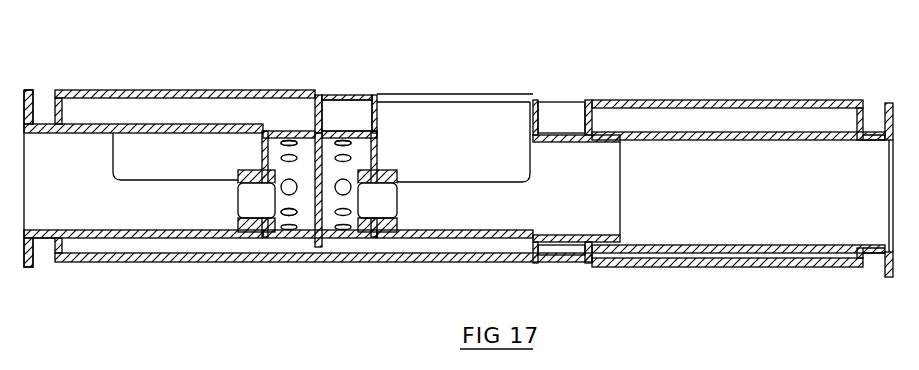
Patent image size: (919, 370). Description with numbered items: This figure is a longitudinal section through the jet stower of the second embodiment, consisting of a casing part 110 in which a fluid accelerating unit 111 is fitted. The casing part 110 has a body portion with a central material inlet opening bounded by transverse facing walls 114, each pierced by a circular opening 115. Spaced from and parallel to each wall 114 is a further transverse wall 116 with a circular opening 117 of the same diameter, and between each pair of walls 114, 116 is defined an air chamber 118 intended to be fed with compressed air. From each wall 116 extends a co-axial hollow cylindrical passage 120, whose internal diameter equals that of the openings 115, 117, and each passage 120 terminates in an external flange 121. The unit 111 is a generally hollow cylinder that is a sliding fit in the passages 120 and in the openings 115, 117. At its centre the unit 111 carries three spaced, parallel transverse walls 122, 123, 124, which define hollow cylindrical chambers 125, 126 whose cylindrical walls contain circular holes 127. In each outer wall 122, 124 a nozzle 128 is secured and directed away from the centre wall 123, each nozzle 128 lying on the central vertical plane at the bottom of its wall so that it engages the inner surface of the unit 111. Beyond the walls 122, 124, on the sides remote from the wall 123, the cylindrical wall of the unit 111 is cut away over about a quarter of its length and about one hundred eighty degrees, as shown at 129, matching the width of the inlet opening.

The casing part 110 is at (745, 268).
The fluid accelerating unit 111 is at (550, 148).
The transverse facing wall 114 is at (378, 132).
The circular opening 115 is at (380, 140).
The further transverse wall 116 is at (313, 116).
The circular opening 117 is at (332, 238).
The air chamber 118 is at (353, 113).
The hollow cylindrical passage 120 is at (722, 137).
The external flange 121 is at (28, 268).
The outer transverse wall 122 is at (255, 158).
The centre wall 123 is at (302, 215).
The outer transverse wall 124 is at (380, 153).
The hollow cylindrical chamber 125 is at (274, 143).
The hollow cylindrical chamber 126 is at (345, 229).
The circular hole 127 is at (342, 140).
The nozzle 128 is at (239, 205).
The cut away portion 129 is at (125, 181).